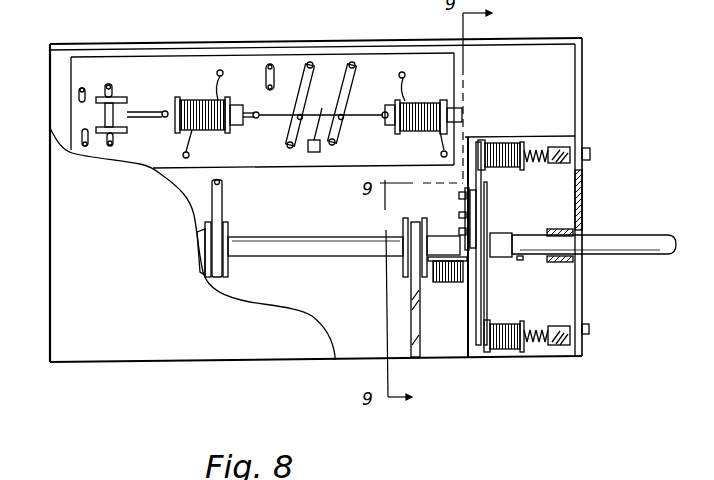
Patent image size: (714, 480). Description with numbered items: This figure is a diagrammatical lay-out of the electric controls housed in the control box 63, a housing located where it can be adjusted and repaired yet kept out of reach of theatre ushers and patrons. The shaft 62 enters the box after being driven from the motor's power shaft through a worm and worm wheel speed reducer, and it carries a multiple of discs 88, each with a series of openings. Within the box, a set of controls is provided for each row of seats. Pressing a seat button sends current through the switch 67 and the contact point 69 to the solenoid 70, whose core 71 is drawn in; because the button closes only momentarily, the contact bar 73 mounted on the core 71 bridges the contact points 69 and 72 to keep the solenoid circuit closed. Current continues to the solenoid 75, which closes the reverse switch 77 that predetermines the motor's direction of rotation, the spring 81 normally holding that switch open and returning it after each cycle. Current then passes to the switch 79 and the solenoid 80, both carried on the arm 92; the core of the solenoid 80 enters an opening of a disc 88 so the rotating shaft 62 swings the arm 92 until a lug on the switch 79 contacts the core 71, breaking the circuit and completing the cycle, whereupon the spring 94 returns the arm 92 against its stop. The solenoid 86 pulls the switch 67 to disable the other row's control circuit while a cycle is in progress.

The shaft 62 is at (268, 247).
The control box 63 is at (187, 352).
The switch 67 is at (122, 98).
The contact point 69 is at (566, 146).
The solenoid 70 is at (509, 145).
The core 71 is at (538, 148).
The contact point 72 is at (569, 329).
The contact bar 73 is at (583, 173).
The solenoid 75 is at (427, 105).
The reverse switch 77 is at (338, 118).
The switch 79 is at (465, 206).
The solenoid 80 is at (452, 284).
The spring 81 is at (79, 94).
The solenoid 86 is at (194, 100).
The disc 88 is at (488, 207).
The arm 92 is at (477, 227).
The spring 94 is at (222, 206).